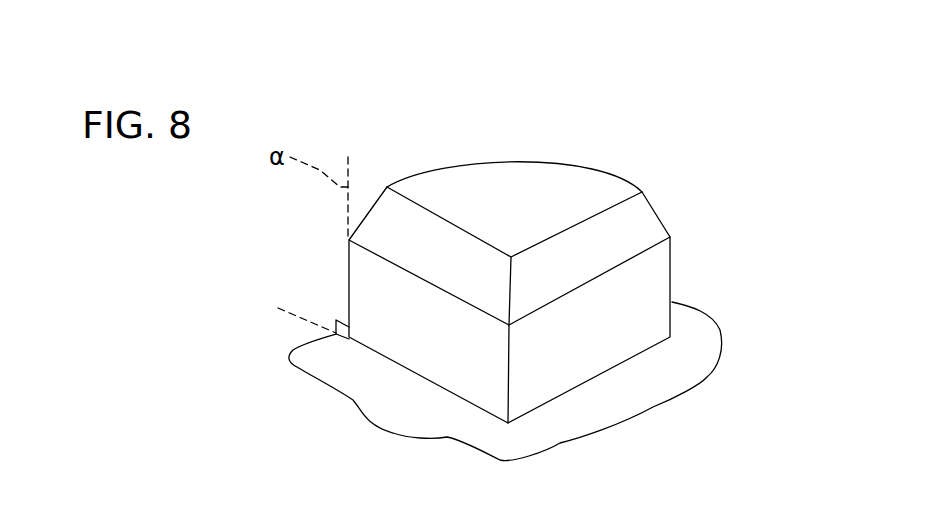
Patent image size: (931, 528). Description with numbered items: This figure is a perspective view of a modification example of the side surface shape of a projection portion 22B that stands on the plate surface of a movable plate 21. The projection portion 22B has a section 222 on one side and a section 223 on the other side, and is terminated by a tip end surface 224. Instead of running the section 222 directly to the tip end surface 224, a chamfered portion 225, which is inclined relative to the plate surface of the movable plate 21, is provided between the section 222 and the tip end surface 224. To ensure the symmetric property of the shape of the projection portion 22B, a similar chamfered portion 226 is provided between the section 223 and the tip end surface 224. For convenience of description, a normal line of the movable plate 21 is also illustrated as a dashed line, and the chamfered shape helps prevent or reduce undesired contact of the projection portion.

The movable plate 21 is at (697, 353).
The projection portion 22B is at (503, 253).
The section 222 is at (367, 277).
The section 223 is at (650, 283).
The tip end surface 224 is at (482, 192).
The chamfered portion 225 is at (413, 235).
The chamfered portion 226 is at (643, 223).